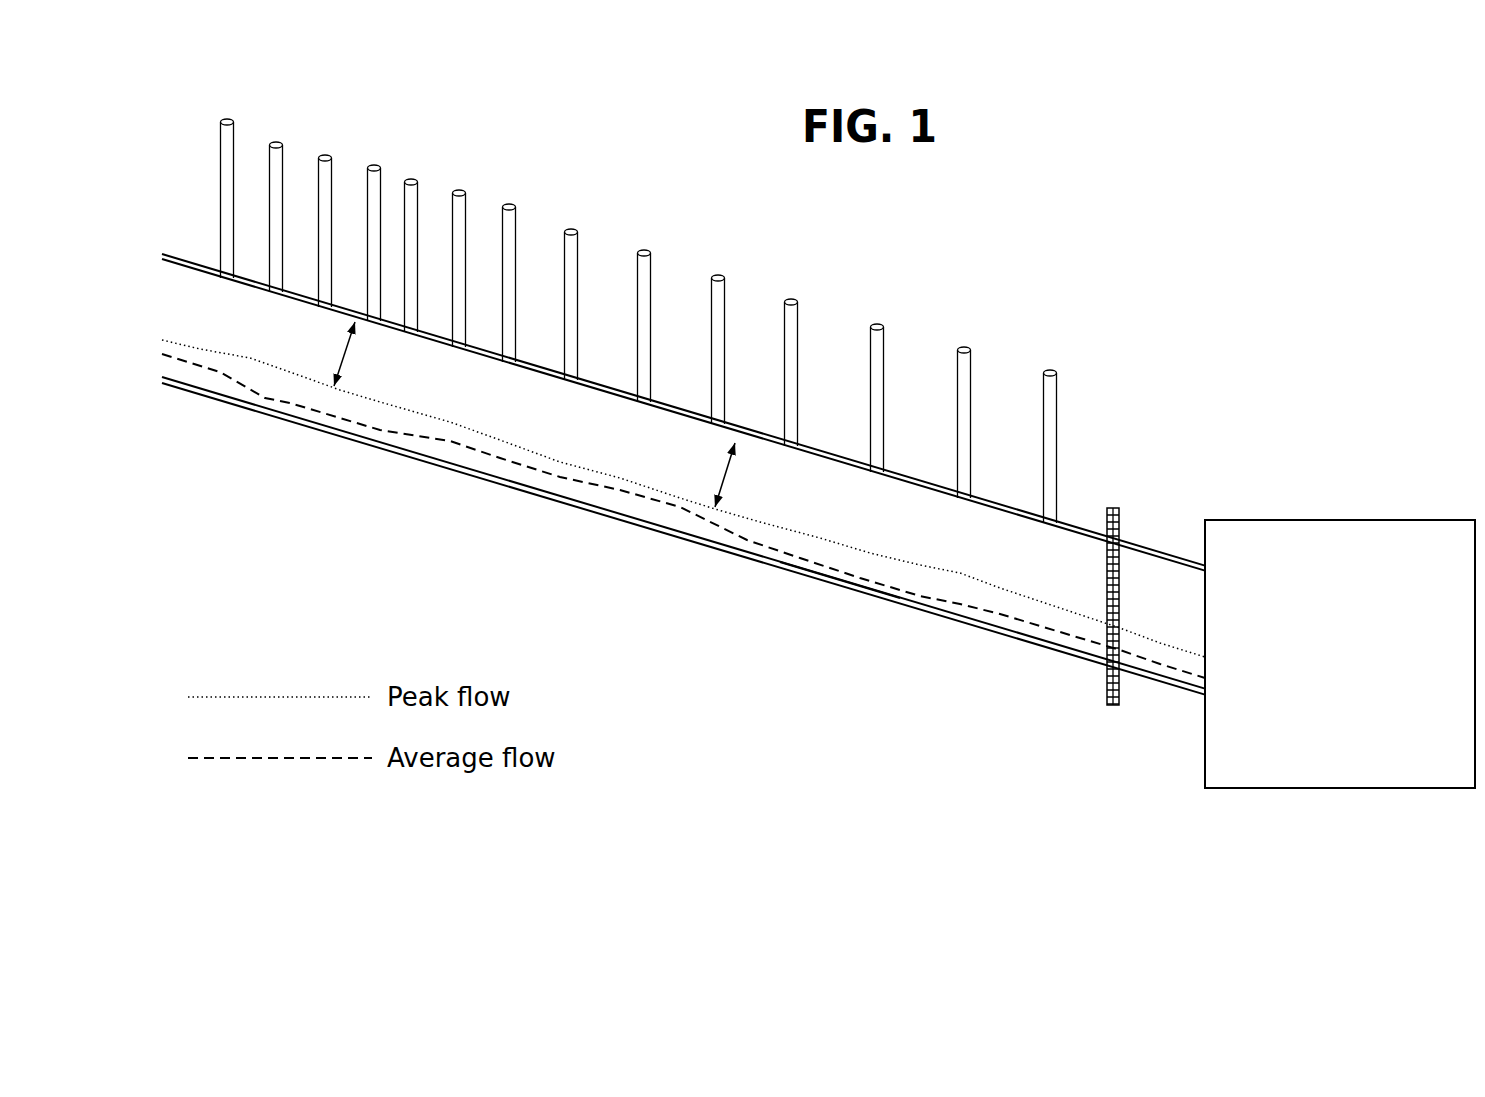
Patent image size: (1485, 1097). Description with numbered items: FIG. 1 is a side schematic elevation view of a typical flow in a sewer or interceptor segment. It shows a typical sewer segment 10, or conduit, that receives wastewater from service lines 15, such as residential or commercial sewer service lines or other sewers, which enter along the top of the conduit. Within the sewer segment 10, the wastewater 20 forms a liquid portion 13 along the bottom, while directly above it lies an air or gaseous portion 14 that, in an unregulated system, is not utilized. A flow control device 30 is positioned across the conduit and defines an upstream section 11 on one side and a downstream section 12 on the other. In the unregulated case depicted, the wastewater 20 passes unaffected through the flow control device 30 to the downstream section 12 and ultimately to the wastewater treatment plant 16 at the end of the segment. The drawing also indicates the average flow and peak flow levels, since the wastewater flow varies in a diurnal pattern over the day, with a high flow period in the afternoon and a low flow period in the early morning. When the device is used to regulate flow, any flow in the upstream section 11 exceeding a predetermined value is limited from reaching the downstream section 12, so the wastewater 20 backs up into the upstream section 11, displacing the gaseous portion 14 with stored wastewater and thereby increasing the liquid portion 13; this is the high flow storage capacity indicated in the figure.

The sewer segment 10 is at (615, 614).
The upstream section 11 is at (987, 656).
The downstream section 12 is at (1176, 703).
The liquid portion 13 is at (871, 589).
The gaseous portion 14 is at (961, 551).
The service lines 15 is at (270, 143).
The wastewater treatment plant 16 is at (1319, 583).
The wastewater 20 is at (221, 382).
The flow control device 30 is at (1115, 504).